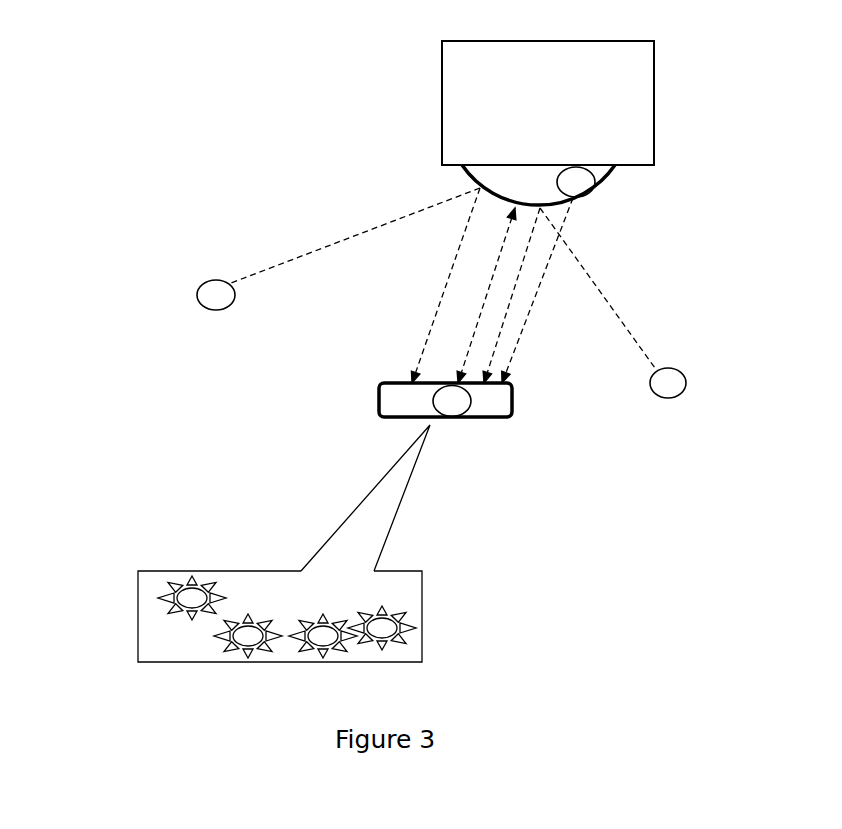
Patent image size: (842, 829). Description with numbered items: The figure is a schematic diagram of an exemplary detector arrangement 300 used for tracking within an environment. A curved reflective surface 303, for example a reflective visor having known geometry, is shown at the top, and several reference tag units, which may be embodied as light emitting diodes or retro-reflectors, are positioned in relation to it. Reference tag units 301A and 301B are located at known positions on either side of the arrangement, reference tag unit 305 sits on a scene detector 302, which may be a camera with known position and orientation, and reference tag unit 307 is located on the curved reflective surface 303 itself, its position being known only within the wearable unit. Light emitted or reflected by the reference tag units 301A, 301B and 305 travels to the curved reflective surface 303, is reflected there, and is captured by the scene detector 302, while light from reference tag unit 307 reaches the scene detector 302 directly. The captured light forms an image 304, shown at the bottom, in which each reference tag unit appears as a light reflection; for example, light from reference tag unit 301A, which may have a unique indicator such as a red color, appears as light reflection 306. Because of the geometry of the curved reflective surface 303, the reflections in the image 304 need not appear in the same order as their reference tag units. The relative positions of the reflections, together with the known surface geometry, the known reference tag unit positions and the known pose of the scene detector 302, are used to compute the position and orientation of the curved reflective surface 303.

The detector arrangement 300 is at (812, 613).
The reference tag unit 301A is at (197, 295).
The reference tag unit 301B is at (686, 382).
The scene detector 302 is at (378, 400).
The curved reflective surface 303 is at (615, 175).
The image 304 is at (135, 622).
The reference tag unit 305 is at (452, 418).
The light reflection 306 is at (208, 588).
The reference tag unit 307 is at (562, 168).